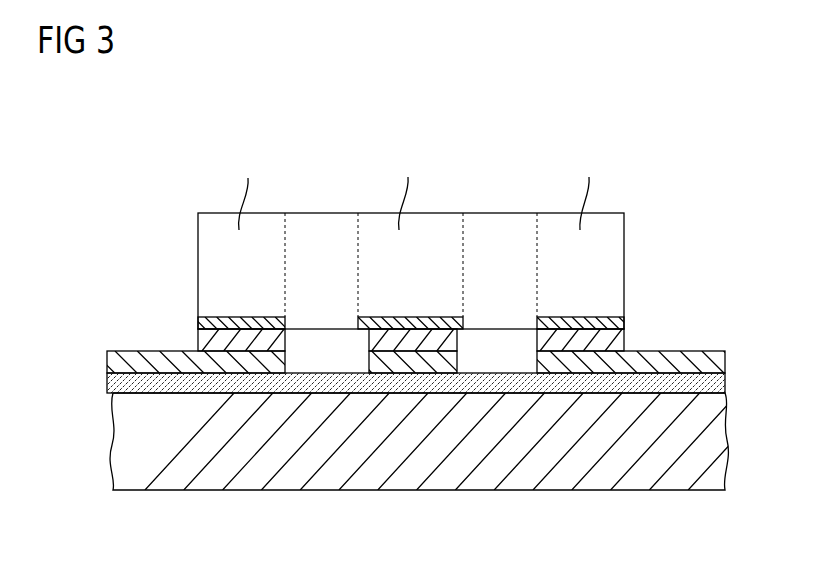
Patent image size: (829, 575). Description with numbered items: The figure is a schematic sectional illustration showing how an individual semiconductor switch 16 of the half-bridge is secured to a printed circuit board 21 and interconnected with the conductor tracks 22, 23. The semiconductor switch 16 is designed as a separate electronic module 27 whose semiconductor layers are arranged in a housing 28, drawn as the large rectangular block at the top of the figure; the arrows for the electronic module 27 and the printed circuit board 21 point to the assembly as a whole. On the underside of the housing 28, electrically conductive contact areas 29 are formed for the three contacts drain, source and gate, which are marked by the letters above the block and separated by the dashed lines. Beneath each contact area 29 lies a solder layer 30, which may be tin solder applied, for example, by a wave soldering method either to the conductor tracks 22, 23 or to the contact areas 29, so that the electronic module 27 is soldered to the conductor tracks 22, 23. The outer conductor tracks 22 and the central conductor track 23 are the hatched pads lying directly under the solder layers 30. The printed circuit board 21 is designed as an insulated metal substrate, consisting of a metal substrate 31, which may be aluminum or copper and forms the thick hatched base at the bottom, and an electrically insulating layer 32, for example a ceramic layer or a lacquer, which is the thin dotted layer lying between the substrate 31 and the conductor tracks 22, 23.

The semiconductor switch 16 is at (327, 209).
The printed circuit board 21 is at (729, 273).
The conductor track 22 is at (113, 362).
The conductor track 23 is at (413, 363).
The electronic module 27 is at (552, 139).
The housing 28 is at (493, 212).
The contact area 29 is at (208, 325).
The solder layer 30 is at (215, 335).
The metal substrate 31 is at (601, 470).
The electrically insulating layer 32 is at (712, 380).